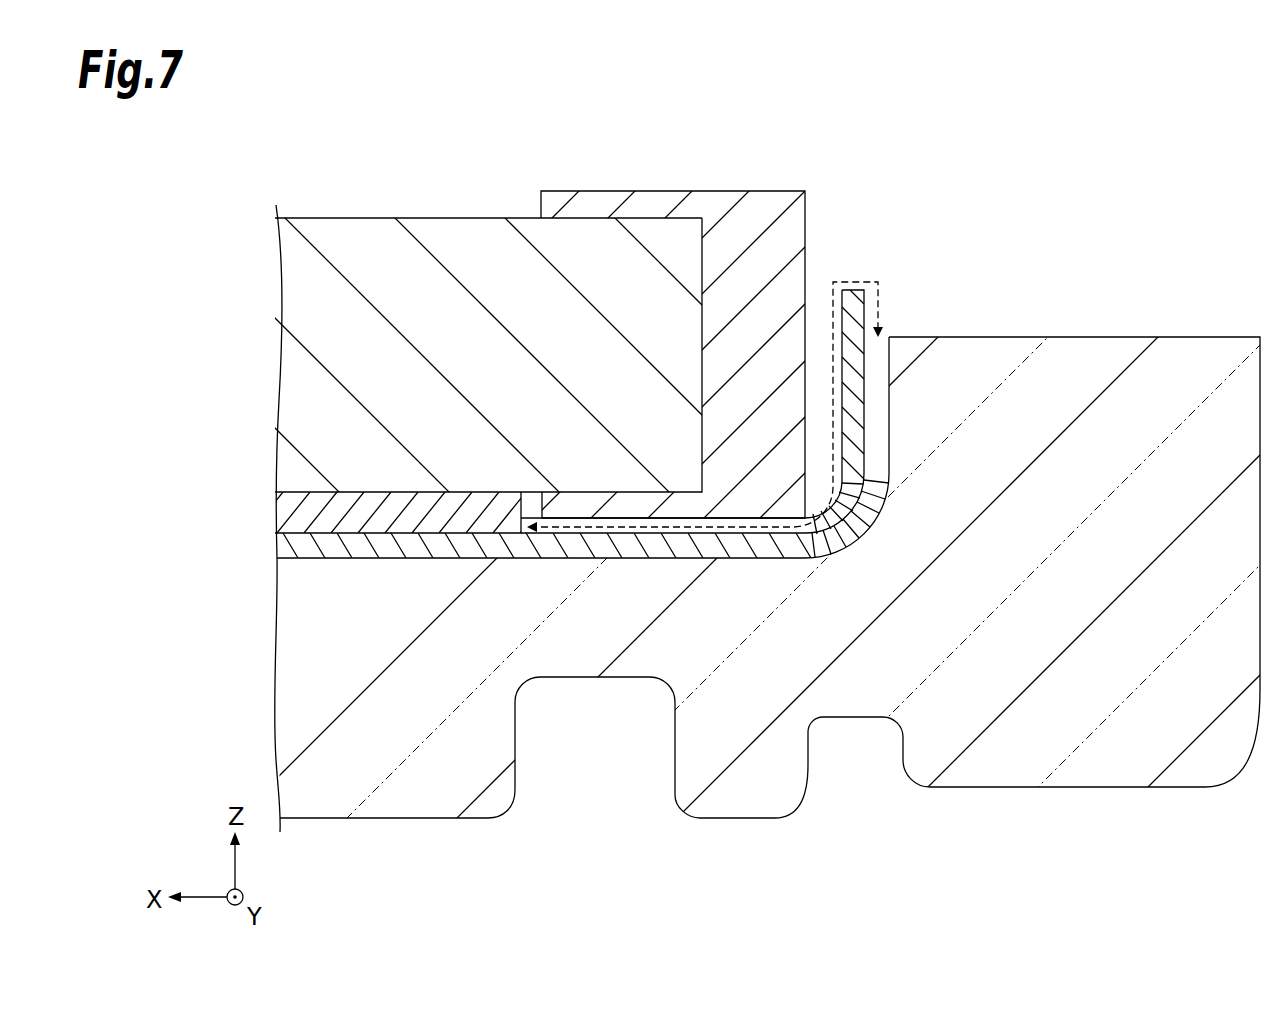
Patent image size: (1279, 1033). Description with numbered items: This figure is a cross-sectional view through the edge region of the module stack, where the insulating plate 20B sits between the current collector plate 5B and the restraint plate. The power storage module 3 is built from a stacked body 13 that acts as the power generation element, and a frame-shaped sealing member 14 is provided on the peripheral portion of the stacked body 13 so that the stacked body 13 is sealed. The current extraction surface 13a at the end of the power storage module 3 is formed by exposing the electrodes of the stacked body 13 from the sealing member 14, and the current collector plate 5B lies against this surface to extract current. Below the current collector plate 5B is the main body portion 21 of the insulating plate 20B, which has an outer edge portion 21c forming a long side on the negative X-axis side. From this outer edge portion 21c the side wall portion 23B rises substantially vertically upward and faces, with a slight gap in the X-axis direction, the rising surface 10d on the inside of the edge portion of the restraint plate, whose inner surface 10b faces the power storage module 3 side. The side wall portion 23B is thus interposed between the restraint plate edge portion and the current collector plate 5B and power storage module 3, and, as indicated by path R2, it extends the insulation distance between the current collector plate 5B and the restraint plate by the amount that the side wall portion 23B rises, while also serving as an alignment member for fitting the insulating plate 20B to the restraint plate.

The power storage module 3 is at (262, 346).
The stacked body 13 is at (336, 208).
The current extraction surface 13a is at (458, 217).
The sealing member 14 is at (736, 183).
The side wall portion 23B is at (834, 308).
The path R2 is at (855, 283).
The rising surface 10d is at (889, 400).
The inner surface 10b is at (1188, 337).
The current collector plate 5B is at (267, 508).
The main body portion 21 is at (267, 549).
The outer edge portion 21c is at (800, 540).
The insulating plate 20B is at (304, 573).